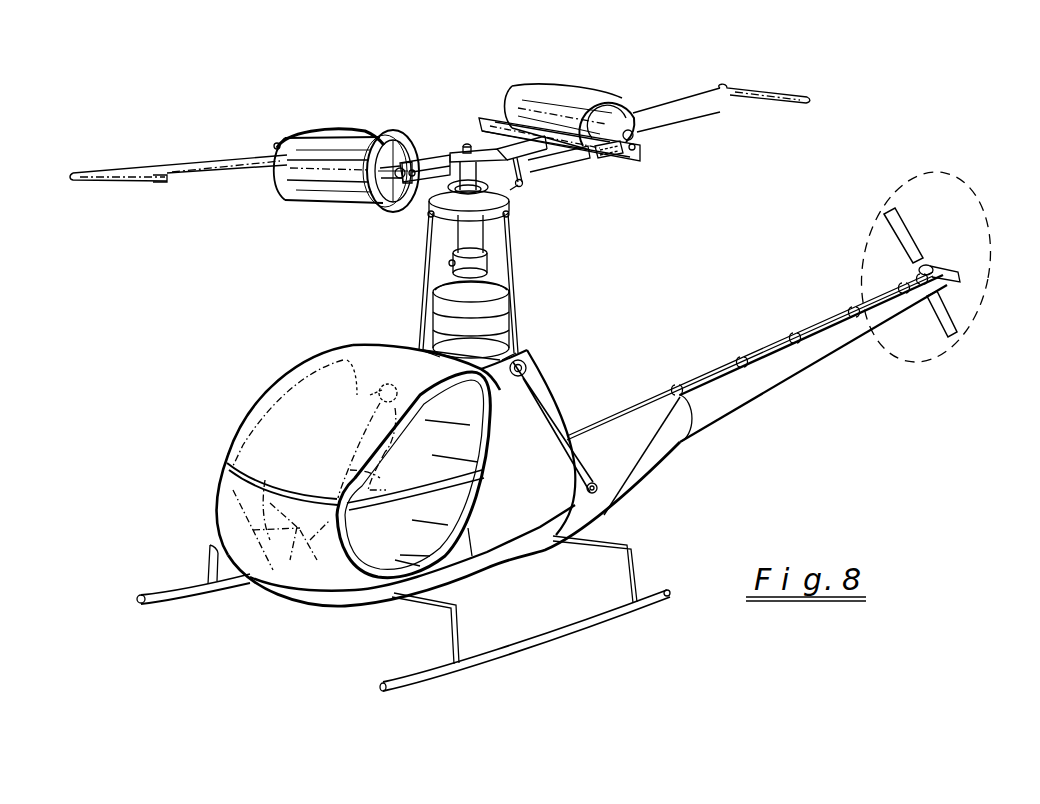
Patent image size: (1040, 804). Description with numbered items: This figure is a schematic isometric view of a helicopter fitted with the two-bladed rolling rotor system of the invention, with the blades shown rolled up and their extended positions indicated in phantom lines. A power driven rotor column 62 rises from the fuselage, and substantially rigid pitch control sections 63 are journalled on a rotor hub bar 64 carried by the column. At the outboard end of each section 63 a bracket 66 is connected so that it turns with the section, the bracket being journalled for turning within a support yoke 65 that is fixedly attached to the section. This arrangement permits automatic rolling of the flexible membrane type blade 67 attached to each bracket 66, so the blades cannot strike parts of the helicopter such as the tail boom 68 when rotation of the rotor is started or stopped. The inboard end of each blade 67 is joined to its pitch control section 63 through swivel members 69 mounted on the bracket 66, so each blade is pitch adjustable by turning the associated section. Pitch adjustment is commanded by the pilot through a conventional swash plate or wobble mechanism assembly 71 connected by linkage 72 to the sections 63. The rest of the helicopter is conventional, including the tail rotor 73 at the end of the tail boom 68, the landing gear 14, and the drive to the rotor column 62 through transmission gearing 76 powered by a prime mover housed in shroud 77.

The landing skid 14 is at (560, 628).
The rotor column 62 is at (479, 180).
The pitch control section 63 is at (442, 158).
The rotor hub bar 64 is at (478, 158).
The support yoke 65 is at (443, 164).
The bracket 66 is at (392, 178).
The flexible membrane type blade 67 is at (208, 165).
The tail boom 68 is at (770, 385).
The swivel members 69 is at (400, 162).
The swash plate or wobble mechanism assembly 71 is at (442, 216).
The linkage 72 is at (426, 205).
The tail rotor 73 is at (950, 330).
The transmission gearing 76 is at (495, 333).
The shroud 77 is at (553, 388).